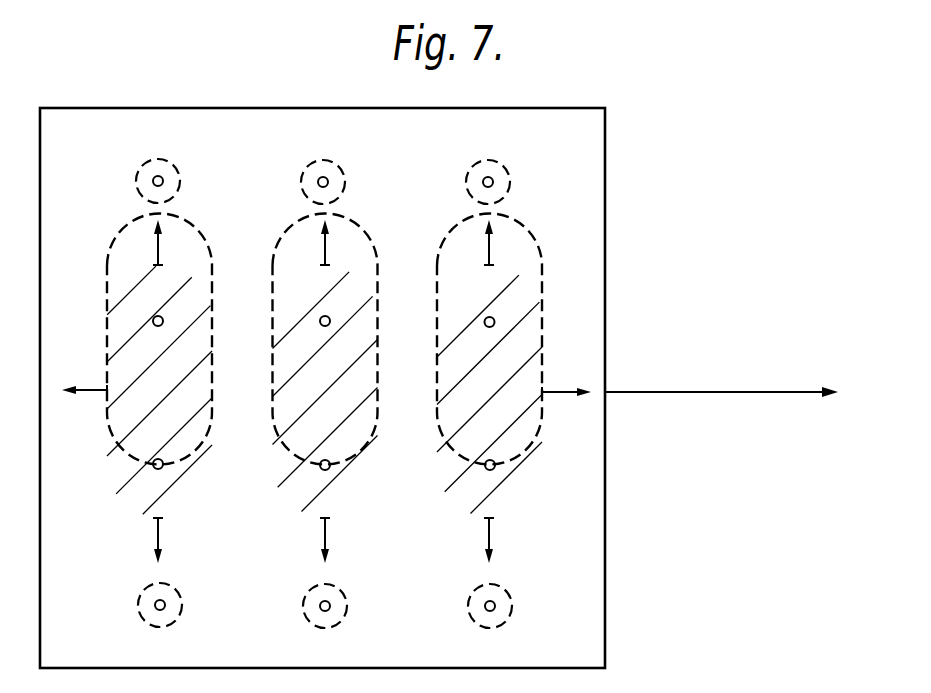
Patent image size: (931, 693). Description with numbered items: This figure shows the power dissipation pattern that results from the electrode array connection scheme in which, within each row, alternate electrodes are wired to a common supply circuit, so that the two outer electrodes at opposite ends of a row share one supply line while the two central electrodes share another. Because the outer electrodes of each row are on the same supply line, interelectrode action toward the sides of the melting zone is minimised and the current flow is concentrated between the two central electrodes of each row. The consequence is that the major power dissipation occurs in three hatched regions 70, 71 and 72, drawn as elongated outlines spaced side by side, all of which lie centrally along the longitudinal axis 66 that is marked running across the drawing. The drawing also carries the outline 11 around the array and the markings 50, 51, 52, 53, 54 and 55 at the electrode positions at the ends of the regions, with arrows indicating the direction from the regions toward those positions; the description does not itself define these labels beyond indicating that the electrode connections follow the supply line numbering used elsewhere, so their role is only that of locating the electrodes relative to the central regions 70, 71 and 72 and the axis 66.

The substrate / sensor body 11 is at (612, 292).
The first electrode contact 50 is at (163, 181).
The second electrode contact 51 is at (165, 608).
The third electrode contact 52 is at (330, 609).
The fourth electrode contact 53 is at (328, 182).
The fifth electrode contact 54 is at (493, 182).
The sixth electrode contact 55 is at (495, 609).
The longitudinal axis 66 is at (660, 393).
The region of major power dissipation 70 is at (189, 292).
The region of major power dissipation 71 is at (356, 292).
The region of major power dissipation 72 is at (533, 298).